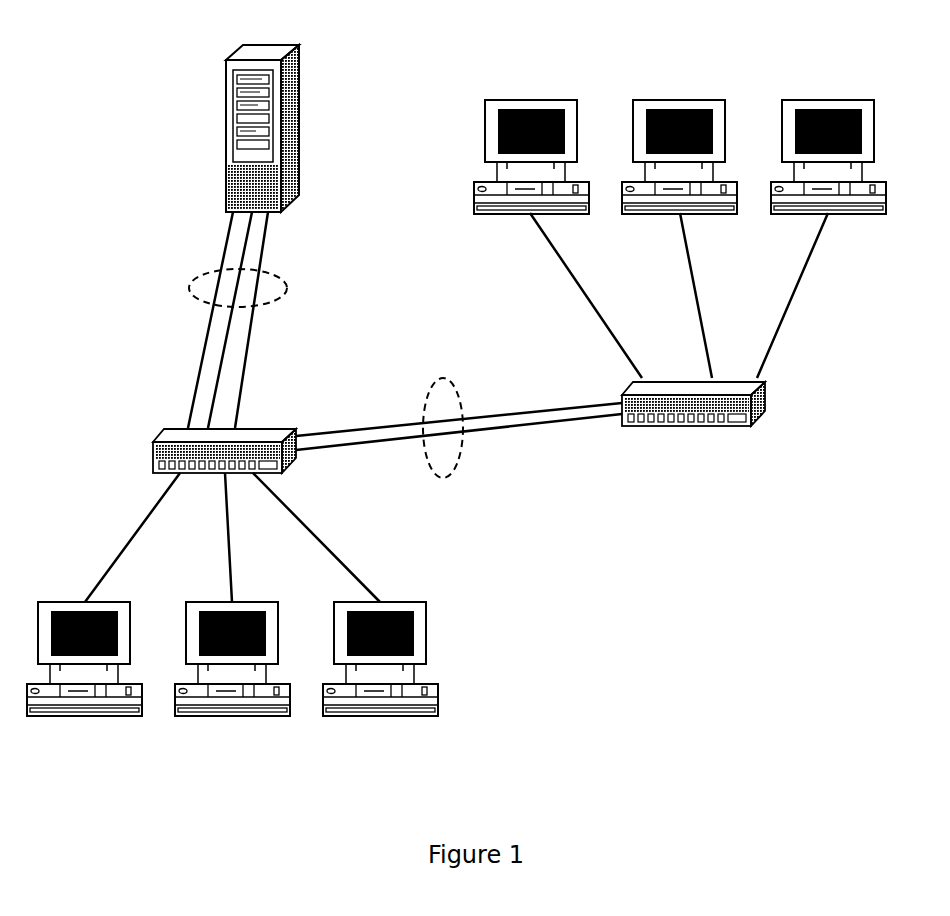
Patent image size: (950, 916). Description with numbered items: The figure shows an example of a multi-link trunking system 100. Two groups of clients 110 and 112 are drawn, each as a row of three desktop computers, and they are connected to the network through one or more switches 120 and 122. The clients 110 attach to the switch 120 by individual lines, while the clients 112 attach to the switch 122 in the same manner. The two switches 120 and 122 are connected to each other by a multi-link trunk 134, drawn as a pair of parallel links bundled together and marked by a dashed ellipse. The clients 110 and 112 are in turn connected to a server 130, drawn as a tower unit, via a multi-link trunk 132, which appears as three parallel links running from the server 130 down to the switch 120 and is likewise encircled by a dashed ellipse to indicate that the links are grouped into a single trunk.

The multi-link trunking system 100 is at (853, 568).
The clients 110 is at (232, 628).
The clients 112 is at (680, 218).
The switch 120 is at (198, 451).
The switch 122 is at (693, 427).
The server 130 is at (262, 110).
The multi-link trunk 132 is at (184, 320).
The multi-link trunk 134 is at (459, 385).